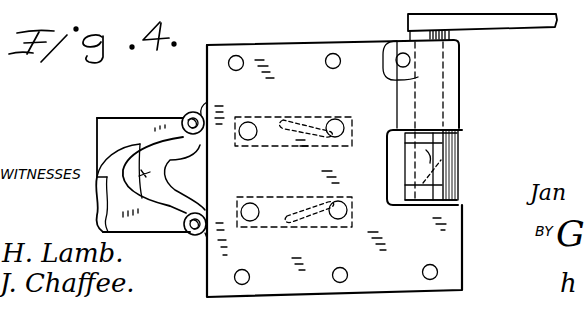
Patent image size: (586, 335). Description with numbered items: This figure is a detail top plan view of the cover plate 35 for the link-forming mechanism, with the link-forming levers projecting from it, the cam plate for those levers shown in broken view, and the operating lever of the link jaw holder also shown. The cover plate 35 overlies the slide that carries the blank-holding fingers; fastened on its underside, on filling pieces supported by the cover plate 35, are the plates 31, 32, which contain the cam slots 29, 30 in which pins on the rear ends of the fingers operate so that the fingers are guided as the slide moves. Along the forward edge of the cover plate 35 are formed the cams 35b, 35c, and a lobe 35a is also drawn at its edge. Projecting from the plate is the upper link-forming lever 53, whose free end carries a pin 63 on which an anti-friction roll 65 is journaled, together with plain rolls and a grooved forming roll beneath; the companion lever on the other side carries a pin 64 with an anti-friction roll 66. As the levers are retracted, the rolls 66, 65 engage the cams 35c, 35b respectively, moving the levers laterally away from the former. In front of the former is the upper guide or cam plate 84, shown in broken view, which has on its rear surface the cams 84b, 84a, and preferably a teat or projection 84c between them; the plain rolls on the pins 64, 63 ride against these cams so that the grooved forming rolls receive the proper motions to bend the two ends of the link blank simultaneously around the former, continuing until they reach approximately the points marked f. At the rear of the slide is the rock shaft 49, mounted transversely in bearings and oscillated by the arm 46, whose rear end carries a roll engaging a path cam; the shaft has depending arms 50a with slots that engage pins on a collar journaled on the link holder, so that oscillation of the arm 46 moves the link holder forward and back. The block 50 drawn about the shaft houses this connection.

The cover plate 35 is at (298, 30).
The plate lobe 35a is at (396, 49).
The cam 35b is at (197, 150).
The cam 35c is at (201, 208).
The cam slot 29 is at (305, 117).
The plate 31 is at (318, 118).
The cam slot 30 is at (311, 200).
The plate 32 is at (270, 198).
The upper lever 53 is at (203, 108).
The pin 63 is at (191, 112).
The anti-friction roll 65 is at (184, 114).
The pin 64 is at (191, 236).
The anti-friction roll 66 is at (204, 218).
The upper guide 84 is at (107, 118).
The cam 84a is at (150, 131).
The cam 84b is at (165, 229).
The teat or projection 84c is at (98, 162).
The block 50 is at (409, 163).
The depending arm 50a is at (463, 157).
The rock shaft 49 is at (432, 205).
The arm 46 is at (483, 27).